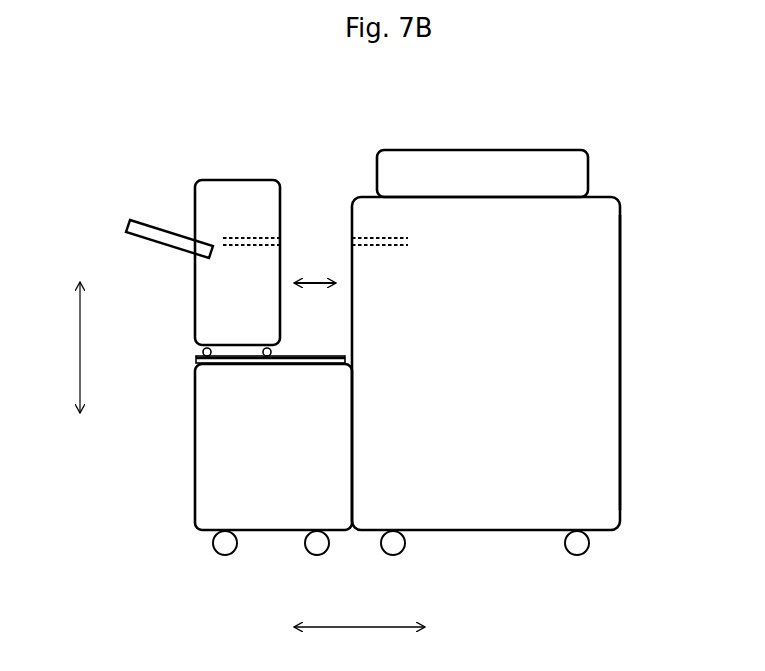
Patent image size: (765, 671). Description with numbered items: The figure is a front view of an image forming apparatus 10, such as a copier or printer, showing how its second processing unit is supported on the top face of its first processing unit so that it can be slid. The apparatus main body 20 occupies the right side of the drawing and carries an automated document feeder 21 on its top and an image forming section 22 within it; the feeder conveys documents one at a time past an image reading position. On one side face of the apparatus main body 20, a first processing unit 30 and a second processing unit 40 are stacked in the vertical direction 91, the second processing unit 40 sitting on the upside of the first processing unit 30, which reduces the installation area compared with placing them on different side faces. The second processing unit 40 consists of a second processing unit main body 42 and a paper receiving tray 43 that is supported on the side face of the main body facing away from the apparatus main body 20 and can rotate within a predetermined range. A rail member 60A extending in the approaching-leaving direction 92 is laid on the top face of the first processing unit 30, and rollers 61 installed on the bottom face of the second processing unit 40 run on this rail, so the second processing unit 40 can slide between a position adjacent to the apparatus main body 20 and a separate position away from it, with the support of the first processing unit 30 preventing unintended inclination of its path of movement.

The image forming apparatus 10 is at (143, 128).
The apparatus main body 20 is at (607, 203).
The automated document feeder 21 is at (575, 157).
The image forming section 22 is at (610, 253).
The first processing unit 30 is at (205, 490).
The second processing unit 40 is at (205, 298).
The second processing unit main body 42 is at (207, 185).
The paper receiving tray 43 is at (143, 218).
The rail member 60A is at (197, 358).
The rollers 61 is at (267, 348).
The vertical direction 91 is at (63, 347).
The approaching-leaving direction 92 is at (359, 610).